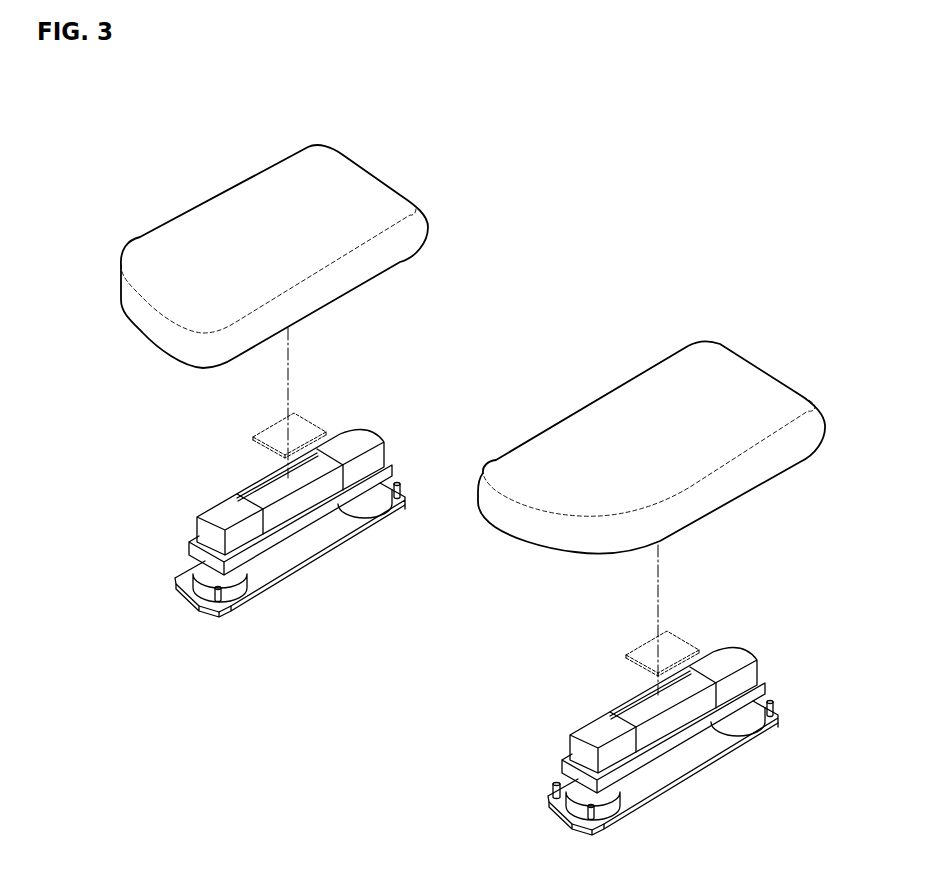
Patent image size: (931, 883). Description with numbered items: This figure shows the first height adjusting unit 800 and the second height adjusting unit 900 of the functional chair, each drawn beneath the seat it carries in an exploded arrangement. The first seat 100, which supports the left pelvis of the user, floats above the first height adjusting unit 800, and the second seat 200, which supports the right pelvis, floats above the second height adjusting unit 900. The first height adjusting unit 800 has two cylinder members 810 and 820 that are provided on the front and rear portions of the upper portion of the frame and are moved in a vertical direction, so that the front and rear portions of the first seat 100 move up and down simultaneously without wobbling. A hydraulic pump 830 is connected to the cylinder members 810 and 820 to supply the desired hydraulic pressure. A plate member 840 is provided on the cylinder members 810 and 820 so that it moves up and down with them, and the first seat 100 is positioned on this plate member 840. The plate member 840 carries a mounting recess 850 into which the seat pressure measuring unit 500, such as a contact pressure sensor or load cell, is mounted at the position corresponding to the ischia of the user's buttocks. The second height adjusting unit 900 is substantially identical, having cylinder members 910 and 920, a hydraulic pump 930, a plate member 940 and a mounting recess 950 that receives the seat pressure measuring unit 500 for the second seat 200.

The first seat 100 is at (156, 206).
The second seat 200 is at (574, 399).
The seat pressure measuring unit 500 is at (255, 435).
The first height adjusting unit 800 is at (158, 496).
The cylinder member 810 is at (198, 530).
The cylinder member 820 is at (383, 455).
The hydraulic pump 830 is at (195, 573).
The plate member 840 is at (232, 502).
The mounting recess 850 is at (268, 482).
The second height adjusting unit 900 is at (640, 742).
The cylinder member 910 is at (626, 721).
The cylinder member 920 is at (758, 684).
The hydraulic pump 930 is at (633, 768).
The plate member 940 is at (589, 713).
The mounting recess 950 is at (639, 690).